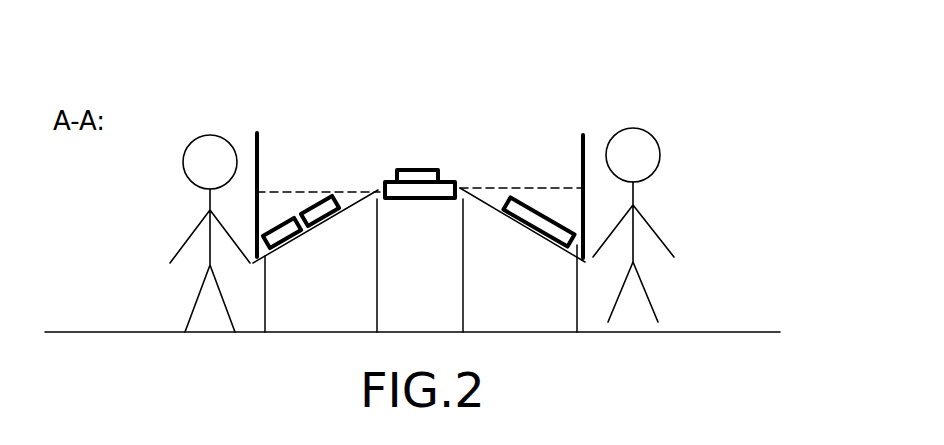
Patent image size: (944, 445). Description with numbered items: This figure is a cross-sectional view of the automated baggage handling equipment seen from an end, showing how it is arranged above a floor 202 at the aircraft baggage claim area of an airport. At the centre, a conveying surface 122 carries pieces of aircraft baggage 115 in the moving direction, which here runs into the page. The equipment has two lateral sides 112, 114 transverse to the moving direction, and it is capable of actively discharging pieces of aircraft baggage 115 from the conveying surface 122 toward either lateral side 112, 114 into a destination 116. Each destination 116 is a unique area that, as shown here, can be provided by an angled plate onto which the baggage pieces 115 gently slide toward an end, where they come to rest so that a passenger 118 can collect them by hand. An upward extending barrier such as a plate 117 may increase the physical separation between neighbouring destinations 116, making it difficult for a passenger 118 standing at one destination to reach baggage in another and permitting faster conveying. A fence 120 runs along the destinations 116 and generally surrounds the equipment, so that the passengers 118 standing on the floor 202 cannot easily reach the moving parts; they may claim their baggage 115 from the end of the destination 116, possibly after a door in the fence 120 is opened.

The lateral side 112 is at (462, 183).
The lateral side 114 is at (382, 180).
The aircraft baggage piece 115 is at (322, 193).
The destination 116 is at (334, 98).
The plate 117 is at (568, 188).
The passenger 118 is at (647, 217).
The fence 120 is at (257, 133).
The conveying surface 122 is at (445, 180).
The floor 202 is at (762, 330).